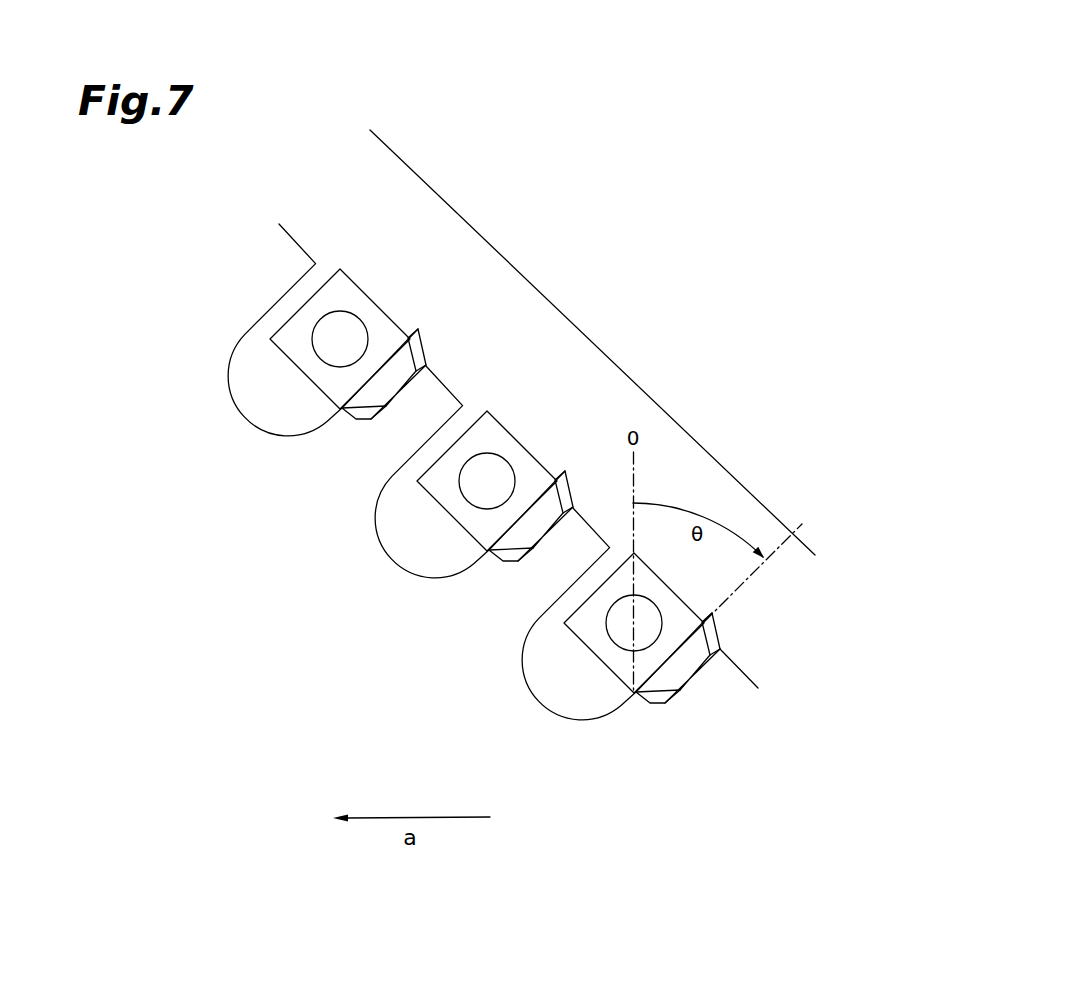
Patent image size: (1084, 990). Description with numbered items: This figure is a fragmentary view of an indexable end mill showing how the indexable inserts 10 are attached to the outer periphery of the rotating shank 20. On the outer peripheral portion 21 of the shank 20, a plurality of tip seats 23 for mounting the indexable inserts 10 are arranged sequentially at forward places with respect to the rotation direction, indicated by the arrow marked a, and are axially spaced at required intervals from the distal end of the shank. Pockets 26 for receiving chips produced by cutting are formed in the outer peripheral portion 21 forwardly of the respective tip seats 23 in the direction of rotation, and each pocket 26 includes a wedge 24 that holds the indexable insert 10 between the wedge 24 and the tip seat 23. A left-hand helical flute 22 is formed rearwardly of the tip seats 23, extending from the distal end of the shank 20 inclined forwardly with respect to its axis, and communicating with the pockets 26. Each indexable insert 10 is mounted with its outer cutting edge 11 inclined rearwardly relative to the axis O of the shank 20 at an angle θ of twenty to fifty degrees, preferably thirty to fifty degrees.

The indexable insert 10 is at (420, 348).
The outer cutting edge 11 is at (380, 357).
The shank 20 is at (655, 300).
The outer peripheral portion 21 is at (530, 233).
The helical flute 22 is at (408, 188).
The tip seat 23 is at (385, 403).
The wedge 24 is at (328, 377).
The pocket 26 is at (257, 412).